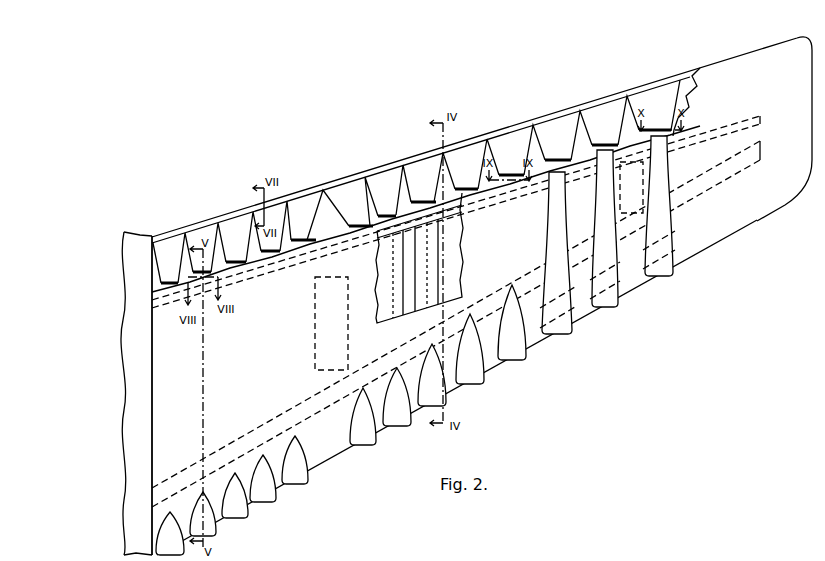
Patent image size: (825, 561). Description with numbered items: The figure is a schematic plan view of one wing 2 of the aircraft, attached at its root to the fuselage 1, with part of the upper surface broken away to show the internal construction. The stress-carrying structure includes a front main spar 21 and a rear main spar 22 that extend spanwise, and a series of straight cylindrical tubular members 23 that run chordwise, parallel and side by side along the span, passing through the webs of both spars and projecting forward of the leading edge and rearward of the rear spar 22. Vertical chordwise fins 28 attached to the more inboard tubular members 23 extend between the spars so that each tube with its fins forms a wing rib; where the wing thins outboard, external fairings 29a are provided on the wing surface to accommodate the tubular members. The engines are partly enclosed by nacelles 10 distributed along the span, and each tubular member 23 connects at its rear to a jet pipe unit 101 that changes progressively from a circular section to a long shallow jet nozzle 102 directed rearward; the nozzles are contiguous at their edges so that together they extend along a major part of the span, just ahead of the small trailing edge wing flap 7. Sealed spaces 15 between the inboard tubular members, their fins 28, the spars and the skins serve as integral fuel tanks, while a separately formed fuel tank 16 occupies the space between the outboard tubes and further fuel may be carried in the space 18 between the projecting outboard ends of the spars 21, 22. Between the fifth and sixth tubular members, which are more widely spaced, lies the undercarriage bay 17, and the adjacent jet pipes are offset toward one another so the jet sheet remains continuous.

The fuselage 1 is at (133, 404).
The wing 2 is at (322, 445).
The trailing edge wing flap 7 is at (355, 174).
The nacelle 10 is at (478, 383).
The space within the wing 15 is at (379, 291).
The fuel tank 16 is at (624, 195).
The undercarriage bay 17 is at (316, 323).
The space 18 is at (700, 158).
The front main spar 21 is at (717, 178).
The rear main spar 22 is at (708, 130).
The tubular member 23 is at (372, 217).
The fin 28 is at (428, 261).
The external fairing 29a is at (558, 266).
The jet pipe unit 101 is at (373, 193).
The jet nozzle 102 is at (365, 170).